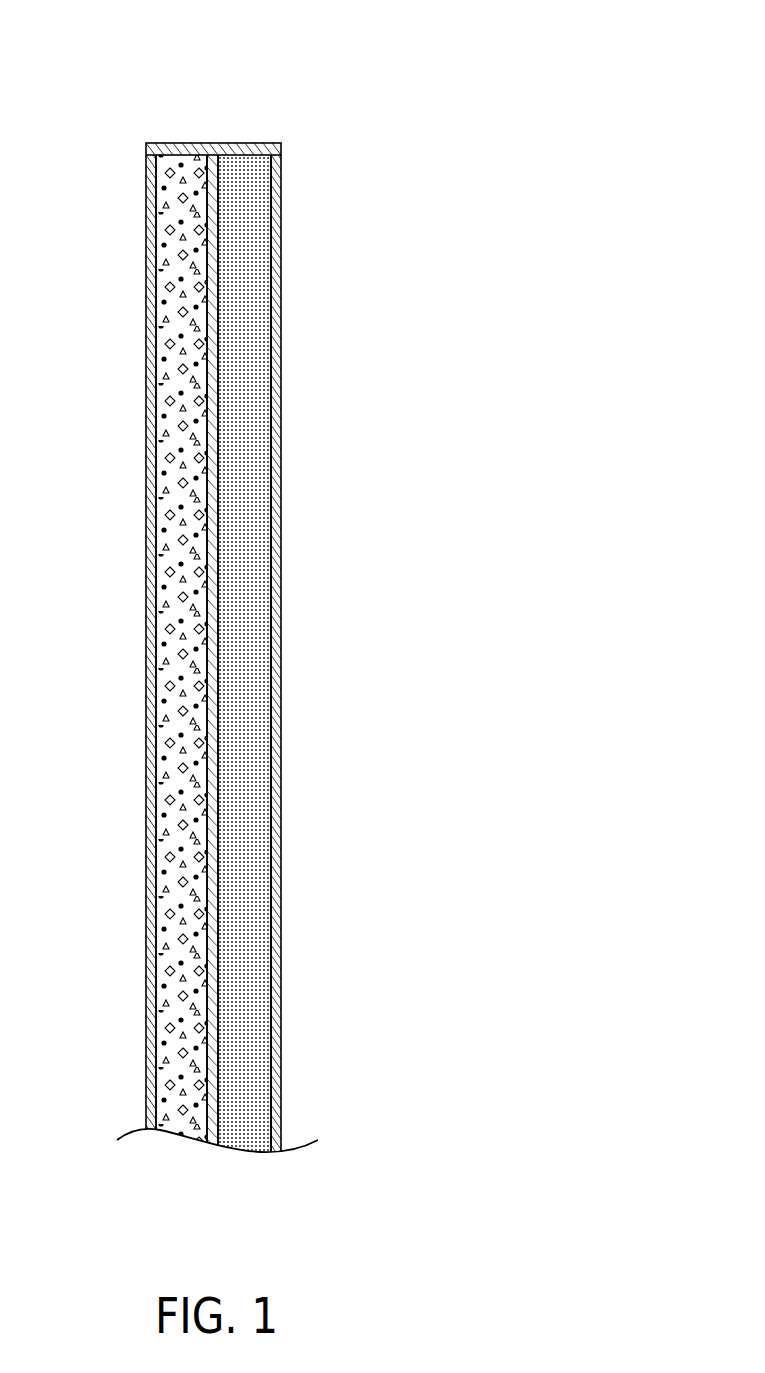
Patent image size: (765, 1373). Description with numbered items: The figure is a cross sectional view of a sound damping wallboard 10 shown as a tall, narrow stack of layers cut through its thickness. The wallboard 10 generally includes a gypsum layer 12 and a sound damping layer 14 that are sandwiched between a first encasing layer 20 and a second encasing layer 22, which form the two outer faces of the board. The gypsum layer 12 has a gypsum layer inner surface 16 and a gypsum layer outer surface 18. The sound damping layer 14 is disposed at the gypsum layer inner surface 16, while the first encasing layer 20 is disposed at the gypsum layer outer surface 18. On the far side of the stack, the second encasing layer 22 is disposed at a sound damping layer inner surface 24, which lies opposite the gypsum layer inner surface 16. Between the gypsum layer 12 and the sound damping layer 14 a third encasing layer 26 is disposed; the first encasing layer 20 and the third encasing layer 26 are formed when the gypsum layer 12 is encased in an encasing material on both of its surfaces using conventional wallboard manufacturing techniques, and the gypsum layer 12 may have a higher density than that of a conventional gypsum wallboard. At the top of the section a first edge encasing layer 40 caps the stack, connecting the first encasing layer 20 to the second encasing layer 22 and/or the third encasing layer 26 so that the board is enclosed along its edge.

The sound damping wallboard 10 is at (249, 585).
The gypsum layer 12 is at (193, 262).
The sound damping layer 14 is at (237, 560).
The gypsum layer inner surface 16 is at (208, 337).
The gypsum layer outer surface 18 is at (157, 538).
The first encasing layer 20 is at (150, 895).
The second encasing layer 22 is at (277, 743).
The sound damping layer inner surface 24 is at (272, 922).
The third encasing layer 26 is at (212, 707).
The first edge encasing layer 40 is at (201, 149).